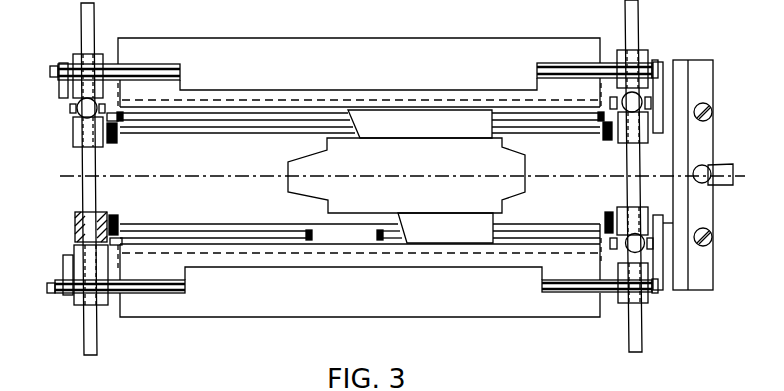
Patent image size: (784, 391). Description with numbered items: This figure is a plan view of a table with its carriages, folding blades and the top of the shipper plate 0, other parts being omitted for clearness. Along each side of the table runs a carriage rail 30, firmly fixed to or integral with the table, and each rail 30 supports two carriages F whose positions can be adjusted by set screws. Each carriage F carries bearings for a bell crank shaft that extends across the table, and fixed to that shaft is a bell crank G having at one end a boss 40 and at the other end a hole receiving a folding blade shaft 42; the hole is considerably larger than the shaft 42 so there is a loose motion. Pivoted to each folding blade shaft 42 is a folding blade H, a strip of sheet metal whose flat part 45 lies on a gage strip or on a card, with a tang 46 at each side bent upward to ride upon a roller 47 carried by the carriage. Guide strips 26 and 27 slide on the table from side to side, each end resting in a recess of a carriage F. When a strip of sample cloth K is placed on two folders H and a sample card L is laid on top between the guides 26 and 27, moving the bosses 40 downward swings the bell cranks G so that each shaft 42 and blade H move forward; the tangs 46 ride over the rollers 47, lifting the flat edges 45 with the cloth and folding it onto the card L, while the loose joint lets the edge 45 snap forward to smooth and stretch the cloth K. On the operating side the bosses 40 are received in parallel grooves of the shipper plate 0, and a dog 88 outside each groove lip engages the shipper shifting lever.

The shipper plate 0 is at (705, 132).
The guide strip 26 is at (363, 240).
The guide strip 27 is at (182, 128).
The carriage rail 30 is at (92, 343).
The boss 40 is at (667, 223).
The folding blade shaft 42 is at (537, 66).
The flat part 45 is at (162, 240).
The tang 46 is at (122, 226).
The roller 47 is at (118, 217).
The dog 88 is at (718, 167).
The carriage F is at (78, 145).
The bell crank G is at (63, 100).
The folding blade H is at (327, 98).
The sample cloth K is at (418, 125).
The sample card L is at (406, 175).